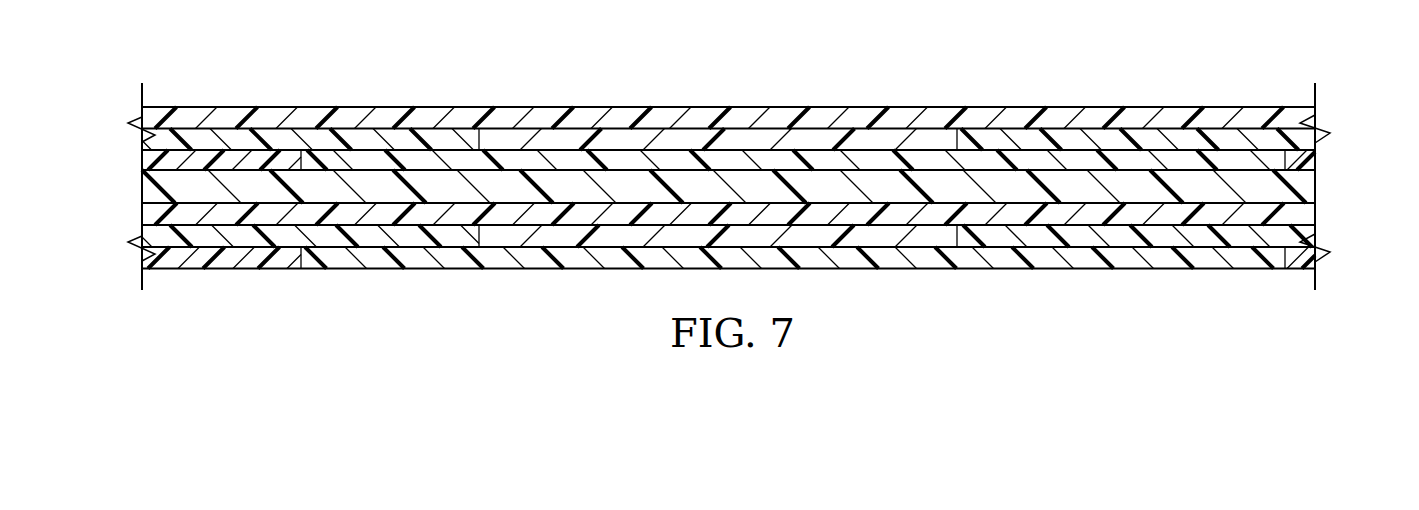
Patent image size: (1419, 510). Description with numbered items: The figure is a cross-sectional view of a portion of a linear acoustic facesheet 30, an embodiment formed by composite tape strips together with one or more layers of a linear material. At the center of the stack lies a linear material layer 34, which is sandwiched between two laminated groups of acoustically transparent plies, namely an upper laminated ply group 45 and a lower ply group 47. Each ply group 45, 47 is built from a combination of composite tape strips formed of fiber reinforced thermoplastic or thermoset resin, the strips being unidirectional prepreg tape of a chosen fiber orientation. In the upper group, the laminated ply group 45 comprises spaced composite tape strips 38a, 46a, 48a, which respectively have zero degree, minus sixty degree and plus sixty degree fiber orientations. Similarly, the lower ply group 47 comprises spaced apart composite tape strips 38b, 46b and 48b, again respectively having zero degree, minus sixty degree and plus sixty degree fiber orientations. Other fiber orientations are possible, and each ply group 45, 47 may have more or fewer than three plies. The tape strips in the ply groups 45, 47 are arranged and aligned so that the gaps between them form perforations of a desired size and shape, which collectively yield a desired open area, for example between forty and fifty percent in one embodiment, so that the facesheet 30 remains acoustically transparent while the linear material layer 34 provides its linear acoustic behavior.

The linear acoustic facesheet 30 is at (1342, 105).
The linear material layer 34 is at (150, 190).
The laminated ply group 45 is at (112, 104).
The ply group 47 is at (112, 202).
The composite tape strip 46a is at (434, 117).
The composite tape strip 46b is at (1158, 213).
The composite tape strip 38a is at (680, 138).
The composite tape strip 38b is at (570, 237).
The composite tape strip 48a is at (930, 158).
The composite tape strip 48b is at (383, 260).